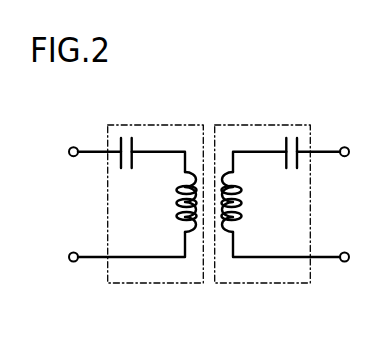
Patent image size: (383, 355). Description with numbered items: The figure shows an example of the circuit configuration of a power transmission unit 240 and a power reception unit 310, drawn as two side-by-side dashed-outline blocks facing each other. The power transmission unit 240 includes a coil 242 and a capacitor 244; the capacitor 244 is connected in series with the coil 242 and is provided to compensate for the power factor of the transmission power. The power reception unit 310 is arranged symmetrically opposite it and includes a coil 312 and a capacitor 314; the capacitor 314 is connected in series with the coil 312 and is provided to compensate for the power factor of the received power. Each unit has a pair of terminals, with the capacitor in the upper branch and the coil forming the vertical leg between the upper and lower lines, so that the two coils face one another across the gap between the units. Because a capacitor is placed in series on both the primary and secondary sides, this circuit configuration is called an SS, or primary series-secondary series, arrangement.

The power transmission unit 240 is at (177, 125).
The coil 242 is at (178, 218).
The capacitor 244 is at (132, 141).
The power reception unit 310 is at (238, 124).
The coil 312 is at (240, 218).
The capacitor 314 is at (285, 141).